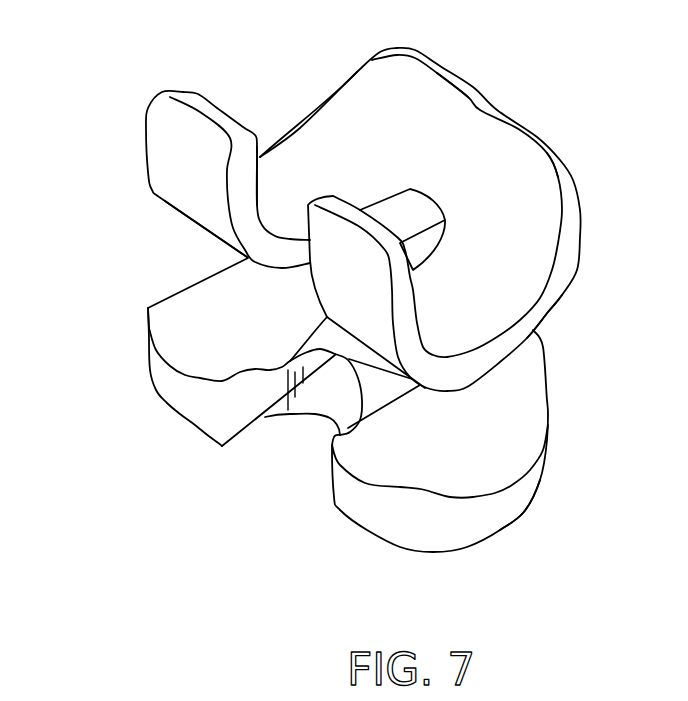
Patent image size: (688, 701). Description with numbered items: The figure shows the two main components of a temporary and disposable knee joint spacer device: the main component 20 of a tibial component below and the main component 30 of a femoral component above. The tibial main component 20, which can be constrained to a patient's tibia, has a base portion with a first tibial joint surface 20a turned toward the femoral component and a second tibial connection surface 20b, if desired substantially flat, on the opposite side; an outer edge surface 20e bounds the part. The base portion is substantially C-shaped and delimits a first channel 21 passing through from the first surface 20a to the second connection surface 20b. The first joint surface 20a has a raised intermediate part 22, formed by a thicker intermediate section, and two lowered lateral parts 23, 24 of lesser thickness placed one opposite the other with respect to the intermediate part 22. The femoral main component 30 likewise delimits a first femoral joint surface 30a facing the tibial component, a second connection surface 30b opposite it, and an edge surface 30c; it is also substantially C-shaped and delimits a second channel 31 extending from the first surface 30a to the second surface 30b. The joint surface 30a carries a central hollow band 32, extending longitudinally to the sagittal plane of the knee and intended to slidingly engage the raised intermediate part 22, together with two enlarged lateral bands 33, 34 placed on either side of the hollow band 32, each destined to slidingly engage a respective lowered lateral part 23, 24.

The main component of a tibial component 20 is at (343, 425).
The first tibial joint surface 20a is at (247, 313).
The second tibial connection surface 20b is at (443, 552).
The outer edge surface 20e is at (497, 500).
The first channel 21 is at (320, 407).
The raised intermediate part 22 is at (237, 430).
The lowered lateral part 23 is at (490, 433).
The lowered lateral part 24 is at (202, 337).
The main component of a femoral component 30 is at (348, 195).
The first femoral joint surface 30a is at (182, 148).
The second connection surface 30b is at (327, 162).
The edge surface 30c is at (533, 318).
The second channel 31 is at (428, 208).
The central hollow band 32 is at (478, 178).
The enlarged lateral band 33 is at (518, 255).
The enlarged lateral band 34 is at (277, 180).